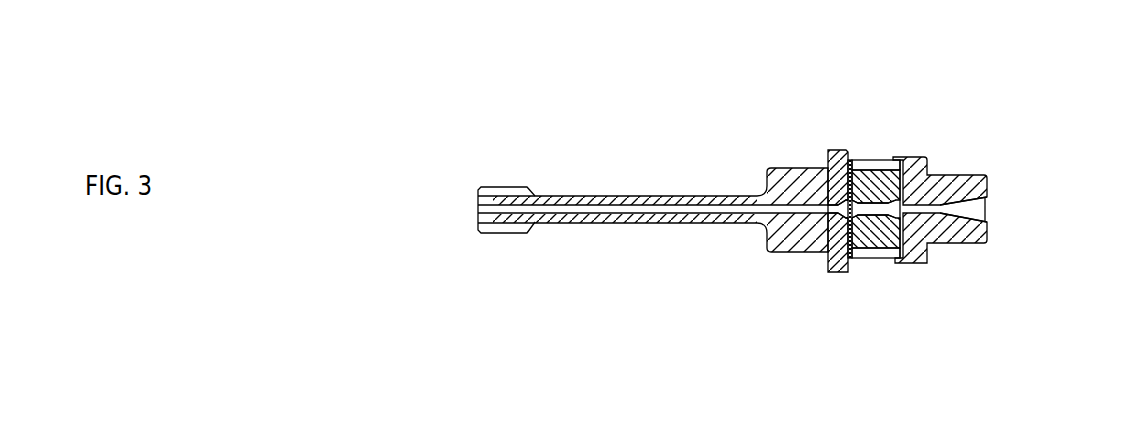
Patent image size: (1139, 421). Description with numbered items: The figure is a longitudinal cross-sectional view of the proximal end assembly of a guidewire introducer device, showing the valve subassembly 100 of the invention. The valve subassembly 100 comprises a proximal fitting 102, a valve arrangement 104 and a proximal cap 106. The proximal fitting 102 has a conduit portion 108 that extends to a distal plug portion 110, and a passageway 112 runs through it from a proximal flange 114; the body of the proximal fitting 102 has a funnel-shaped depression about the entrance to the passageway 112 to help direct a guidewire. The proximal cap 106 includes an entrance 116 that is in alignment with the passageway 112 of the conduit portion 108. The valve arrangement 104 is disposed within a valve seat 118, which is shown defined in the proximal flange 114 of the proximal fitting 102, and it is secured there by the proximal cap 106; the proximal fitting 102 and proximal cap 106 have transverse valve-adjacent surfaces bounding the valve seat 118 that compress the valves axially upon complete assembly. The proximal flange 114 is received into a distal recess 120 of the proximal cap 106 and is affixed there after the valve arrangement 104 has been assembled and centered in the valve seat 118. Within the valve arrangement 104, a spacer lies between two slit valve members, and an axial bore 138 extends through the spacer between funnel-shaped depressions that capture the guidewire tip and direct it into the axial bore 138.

The valve subassembly 100 is at (745, 166).
The proximal fitting 102 is at (737, 181).
The valve arrangement 104 is at (930, 149).
The proximal cap 106 is at (1001, 170).
The conduit portion 108 is at (617, 166).
The distal plug portion 110 is at (458, 181).
The passageway 112 is at (658, 241).
The proximal flange 114 is at (787, 140).
The entrance 116 is at (1024, 228).
The valve seat 118 is at (804, 169).
The distal recess 120 is at (930, 278).
The axial bore 138 is at (809, 254).